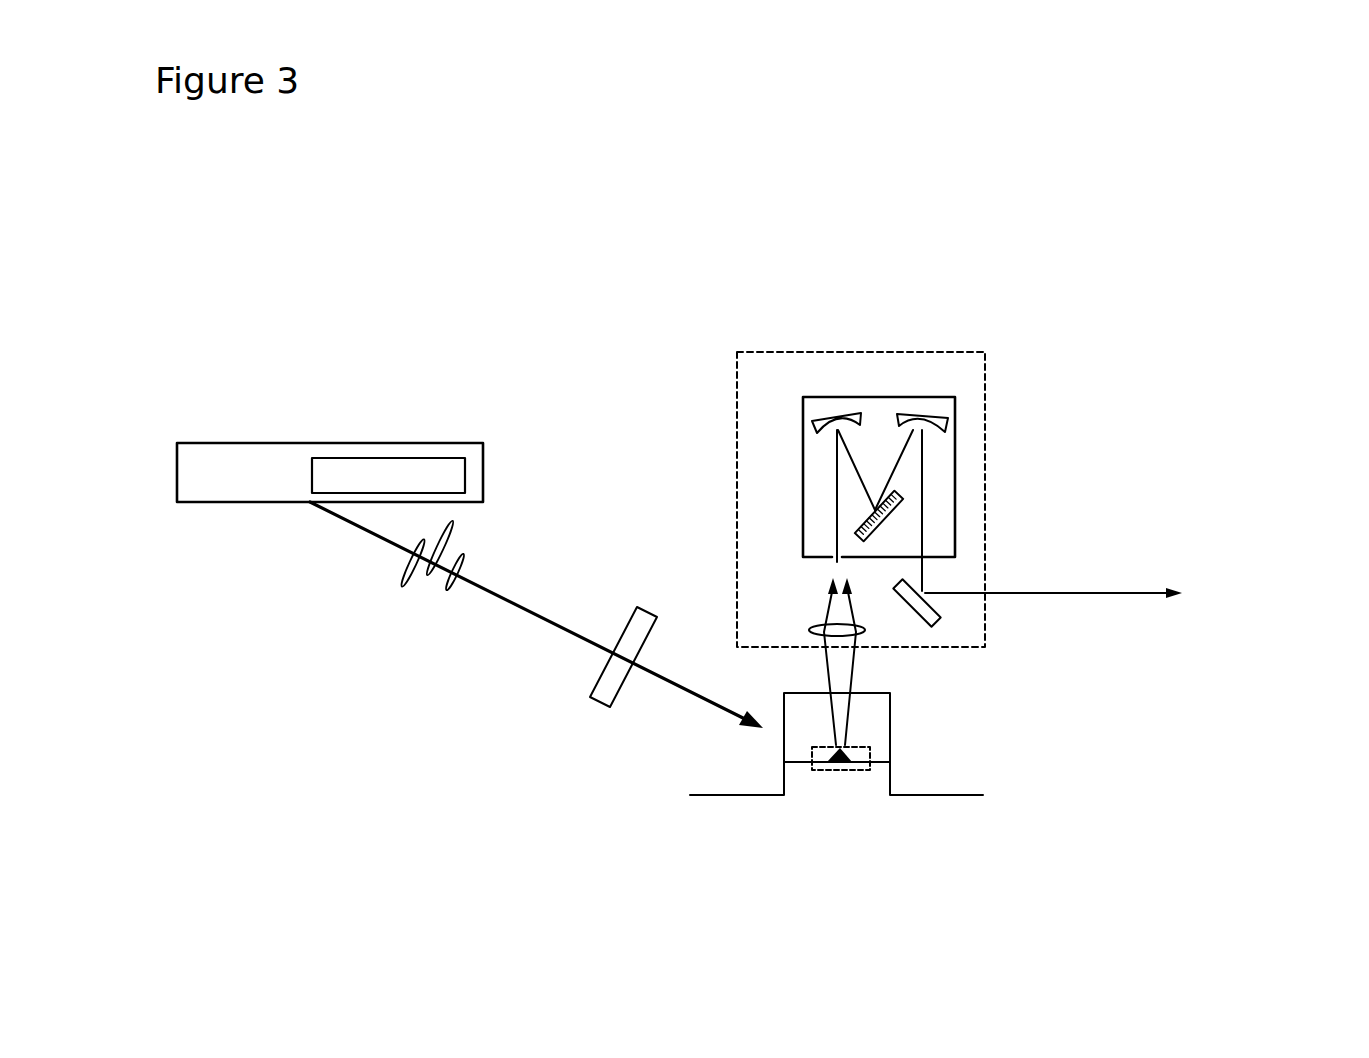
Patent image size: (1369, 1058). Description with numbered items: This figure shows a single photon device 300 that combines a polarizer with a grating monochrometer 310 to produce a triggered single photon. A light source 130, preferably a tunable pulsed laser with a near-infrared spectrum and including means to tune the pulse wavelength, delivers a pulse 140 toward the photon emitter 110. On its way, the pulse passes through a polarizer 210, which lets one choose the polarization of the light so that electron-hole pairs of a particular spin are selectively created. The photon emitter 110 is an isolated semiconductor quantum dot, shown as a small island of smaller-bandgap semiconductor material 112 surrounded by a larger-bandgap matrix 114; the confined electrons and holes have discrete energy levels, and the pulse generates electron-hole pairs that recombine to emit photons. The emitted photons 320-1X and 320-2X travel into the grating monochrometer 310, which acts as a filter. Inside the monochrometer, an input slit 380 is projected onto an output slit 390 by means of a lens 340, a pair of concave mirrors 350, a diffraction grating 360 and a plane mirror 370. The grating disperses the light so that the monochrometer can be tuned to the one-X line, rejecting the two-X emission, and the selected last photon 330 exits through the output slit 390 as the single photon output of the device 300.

The photon emitter 110 is at (935, 772).
The smaller-bandgap semiconductor material 112 is at (855, 752).
The larger-bandgap matrix 114 is at (858, 772).
The light source 130 is at (258, 502).
The pulse 140 is at (433, 590).
The polarizer 210 is at (592, 698).
The single photon device 300 is at (352, 250).
The grating monochrometer 310 is at (737, 440).
The emitted photon 320-1X is at (823, 670).
The emitted photon 320-2X is at (850, 680).
The last photon 330 is at (1132, 590).
The lens 340 is at (810, 623).
The concave mirrors 350 is at (822, 410).
The diffraction grating 360 is at (895, 510).
The plane mirror 370 is at (933, 613).
The input slit 380 is at (830, 555).
The output slit 390 is at (985, 592).